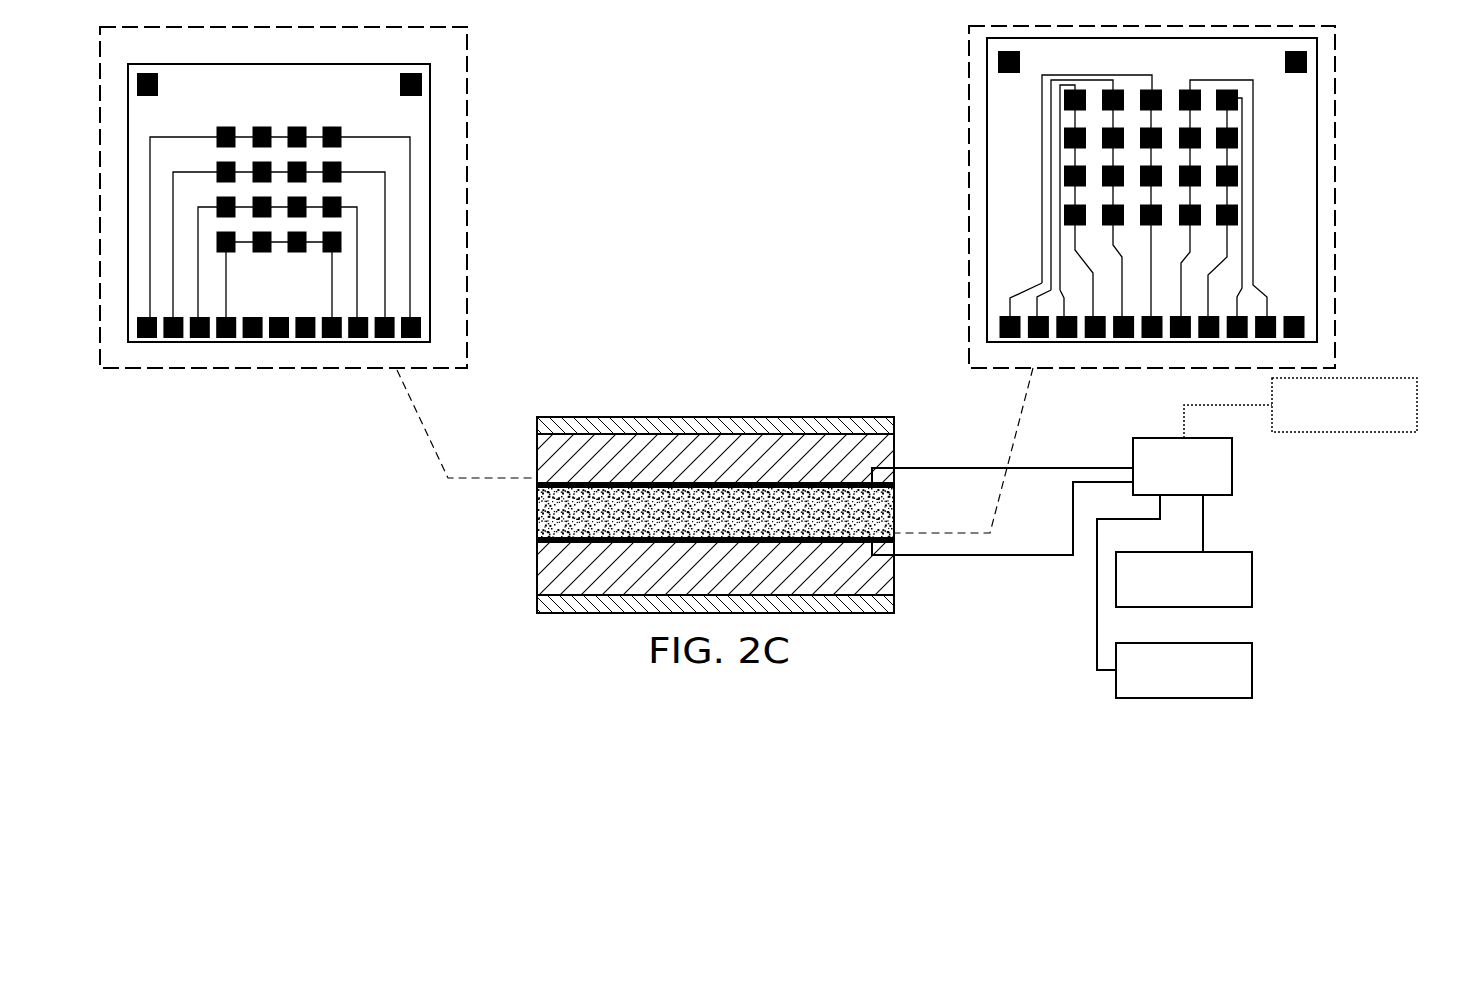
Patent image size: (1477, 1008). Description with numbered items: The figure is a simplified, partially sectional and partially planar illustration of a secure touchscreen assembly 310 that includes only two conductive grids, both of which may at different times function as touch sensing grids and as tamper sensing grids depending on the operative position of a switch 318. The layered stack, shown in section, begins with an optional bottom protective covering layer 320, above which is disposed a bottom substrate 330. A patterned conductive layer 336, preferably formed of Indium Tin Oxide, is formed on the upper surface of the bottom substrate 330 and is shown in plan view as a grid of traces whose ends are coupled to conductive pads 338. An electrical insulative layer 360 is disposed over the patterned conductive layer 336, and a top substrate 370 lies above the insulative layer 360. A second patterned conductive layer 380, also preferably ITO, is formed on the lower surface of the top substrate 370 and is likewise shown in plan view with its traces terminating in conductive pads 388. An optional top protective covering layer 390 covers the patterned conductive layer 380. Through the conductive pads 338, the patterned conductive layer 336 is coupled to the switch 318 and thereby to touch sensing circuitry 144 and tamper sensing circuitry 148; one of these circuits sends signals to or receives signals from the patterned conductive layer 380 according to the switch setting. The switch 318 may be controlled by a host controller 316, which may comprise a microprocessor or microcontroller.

The secure touchscreen assembly 310 is at (812, 392).
The host controller 316 is at (1417, 408).
The switch 318 is at (1233, 467).
The bottom protective covering layer 320 is at (894, 604).
The bottom substrate 330 is at (537, 588).
The patterned conductive layer 336 is at (430, 108).
The conductive pad 338 is at (422, 320).
The electrical insulative layer 360 is at (894, 510).
The top substrate 370 is at (894, 445).
The patterned conductive layer 380 is at (987, 102).
The conductive pad 388 is at (998, 318).
The top protective covering layer 390 is at (537, 428).
The touch sensing circuitry 144 is at (1253, 568).
The tamper sensing circuitry 148 is at (1253, 667).